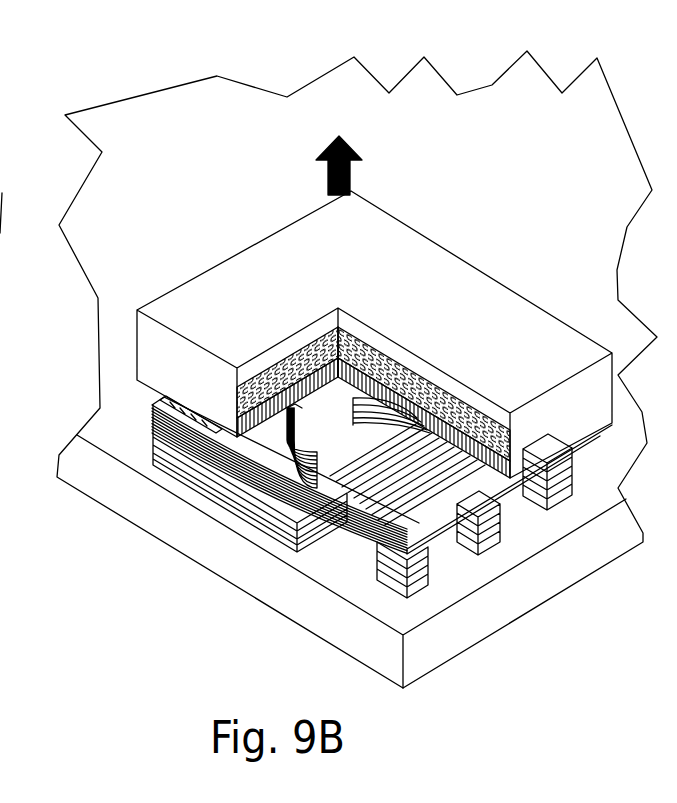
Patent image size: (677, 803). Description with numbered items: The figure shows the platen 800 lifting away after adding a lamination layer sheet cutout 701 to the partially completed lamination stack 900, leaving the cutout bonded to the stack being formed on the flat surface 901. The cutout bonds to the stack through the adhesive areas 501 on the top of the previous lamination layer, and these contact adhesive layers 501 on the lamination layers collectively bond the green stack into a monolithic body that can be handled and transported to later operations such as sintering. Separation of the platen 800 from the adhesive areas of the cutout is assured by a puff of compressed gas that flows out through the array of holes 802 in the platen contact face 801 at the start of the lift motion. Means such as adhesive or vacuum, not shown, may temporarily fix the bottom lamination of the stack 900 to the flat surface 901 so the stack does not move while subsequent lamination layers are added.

The platen 800 is at (445, 291).
The platen contact face 801 is at (141, 407).
The array of holes 802 is at (285, 385).
The partially completed lamination stack 900 is at (177, 465).
The flat surface 901 is at (455, 607).
The adhesive areas 501 is at (352, 538).
The lamination layer sheet cutout 701 is at (402, 525).